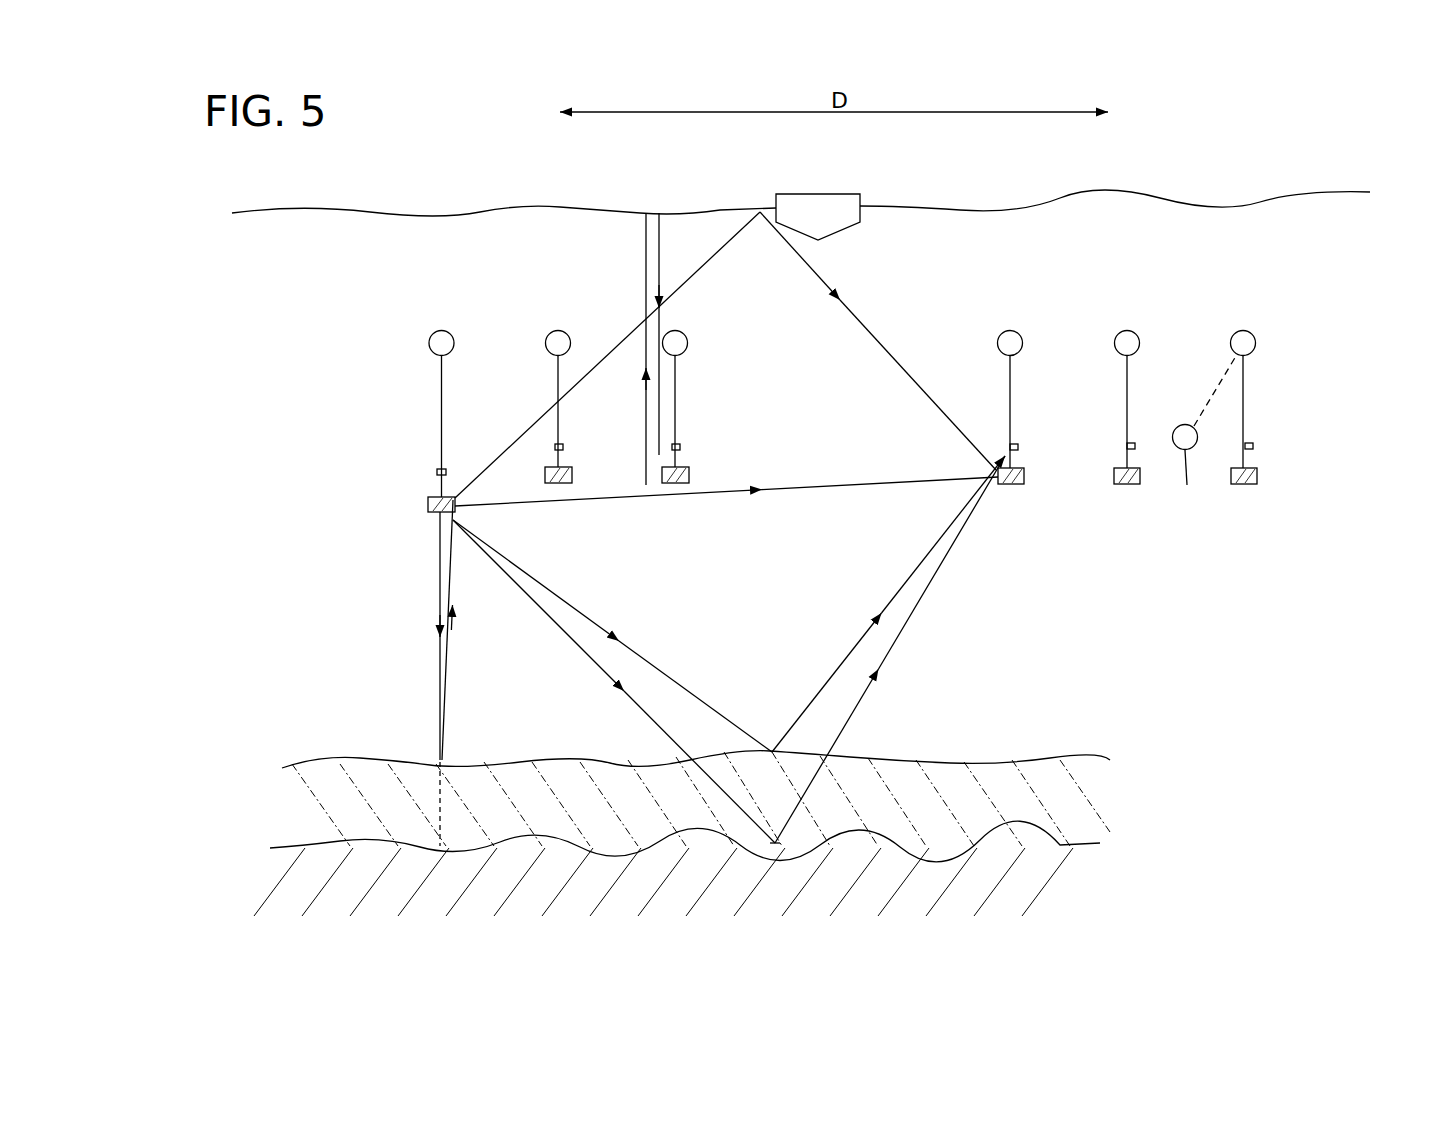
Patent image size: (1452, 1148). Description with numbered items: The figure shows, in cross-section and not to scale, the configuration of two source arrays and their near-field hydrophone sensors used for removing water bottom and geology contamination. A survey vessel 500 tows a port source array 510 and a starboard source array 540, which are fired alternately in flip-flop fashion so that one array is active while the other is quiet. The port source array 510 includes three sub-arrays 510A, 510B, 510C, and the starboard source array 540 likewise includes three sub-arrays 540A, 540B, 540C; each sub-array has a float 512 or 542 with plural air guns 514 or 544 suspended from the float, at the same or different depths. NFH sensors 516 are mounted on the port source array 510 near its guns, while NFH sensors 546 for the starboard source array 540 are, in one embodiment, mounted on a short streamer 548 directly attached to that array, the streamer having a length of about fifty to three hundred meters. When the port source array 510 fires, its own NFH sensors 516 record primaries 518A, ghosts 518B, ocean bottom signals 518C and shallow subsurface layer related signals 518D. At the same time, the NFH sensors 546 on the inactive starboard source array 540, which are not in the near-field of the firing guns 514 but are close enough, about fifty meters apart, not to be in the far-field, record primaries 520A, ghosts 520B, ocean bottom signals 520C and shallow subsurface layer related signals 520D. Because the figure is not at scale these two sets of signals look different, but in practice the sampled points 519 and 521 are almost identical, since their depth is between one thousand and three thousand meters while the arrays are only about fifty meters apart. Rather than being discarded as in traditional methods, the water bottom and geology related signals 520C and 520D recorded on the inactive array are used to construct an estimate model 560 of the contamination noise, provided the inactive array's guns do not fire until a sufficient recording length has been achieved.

The survey vessel 500 is at (850, 186).
The port source array 510 is at (437, 262).
The first sub-array of port source array 510A is at (419, 407).
The second sub-array of port source array 510B is at (537, 373).
The third sub-array of port source array 510C is at (708, 377).
The float 512 is at (449, 332).
The air gun 514 is at (427, 503).
The NFH sensor 516 is at (448, 470).
The primaries 518A is at (617, 470).
The ghosts 518B is at (646, 420).
The ocean bottom signals 518C is at (439, 592).
The shallow subsurface layer related signals 518D is at (432, 793).
The sampled point 519 is at (440, 848).
The primaries 520A is at (810, 485).
The ghosts 520B is at (858, 326).
The ocean bottom signals 520C is at (660, 663).
The shallow subsurface layer related signals 520D is at (598, 676).
The sampled point 521 is at (775, 845).
The starboard source array 540 is at (1285, 243).
The first sub-array of starboard source array 540A is at (1012, 394).
The second sub-array of starboard source array 540B is at (1108, 380).
The third sub-array of starboard source array 540C is at (1277, 387).
The float 542 is at (1010, 330).
The air gun 544 is at (1023, 483).
The NFH sensor 546 is at (1018, 450).
The short streamer 548 is at (1203, 434).
The estimate model of contamination noise 560 is at (1108, 666).